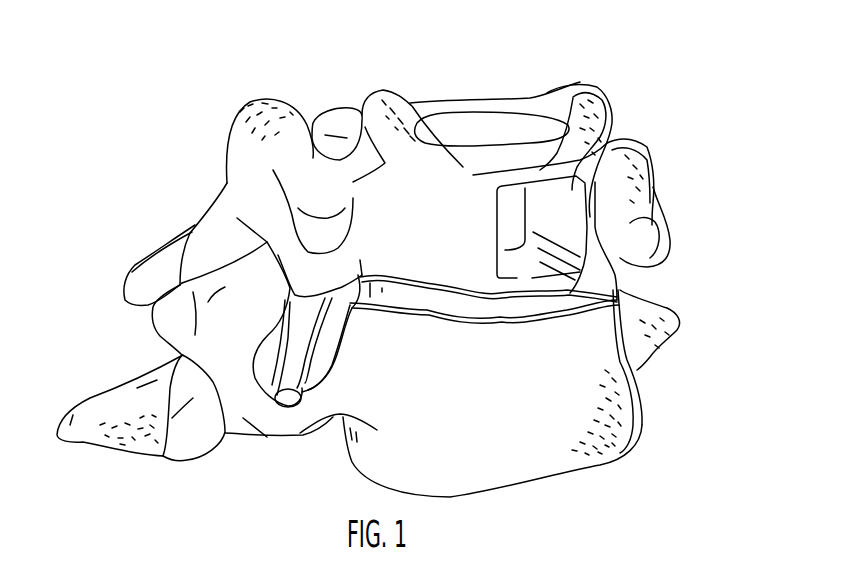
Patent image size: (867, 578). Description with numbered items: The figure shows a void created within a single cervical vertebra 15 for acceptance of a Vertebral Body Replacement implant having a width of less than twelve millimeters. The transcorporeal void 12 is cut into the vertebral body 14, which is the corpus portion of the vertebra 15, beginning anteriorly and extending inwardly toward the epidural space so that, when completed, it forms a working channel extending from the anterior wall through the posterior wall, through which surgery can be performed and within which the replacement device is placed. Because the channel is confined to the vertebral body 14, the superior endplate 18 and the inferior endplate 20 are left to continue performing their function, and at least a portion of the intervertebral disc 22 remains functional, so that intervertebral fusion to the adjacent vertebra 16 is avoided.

The transcorporeal void 12 is at (513, 208).
The vertebral body 14 is at (437, 237).
The vertebra 15 is at (322, 182).
The adjacent vertebra 16 is at (367, 400).
The superior endplate 18 is at (571, 155).
The inferior endplate 20 is at (577, 290).
The intervertebral disc 22 is at (530, 305).